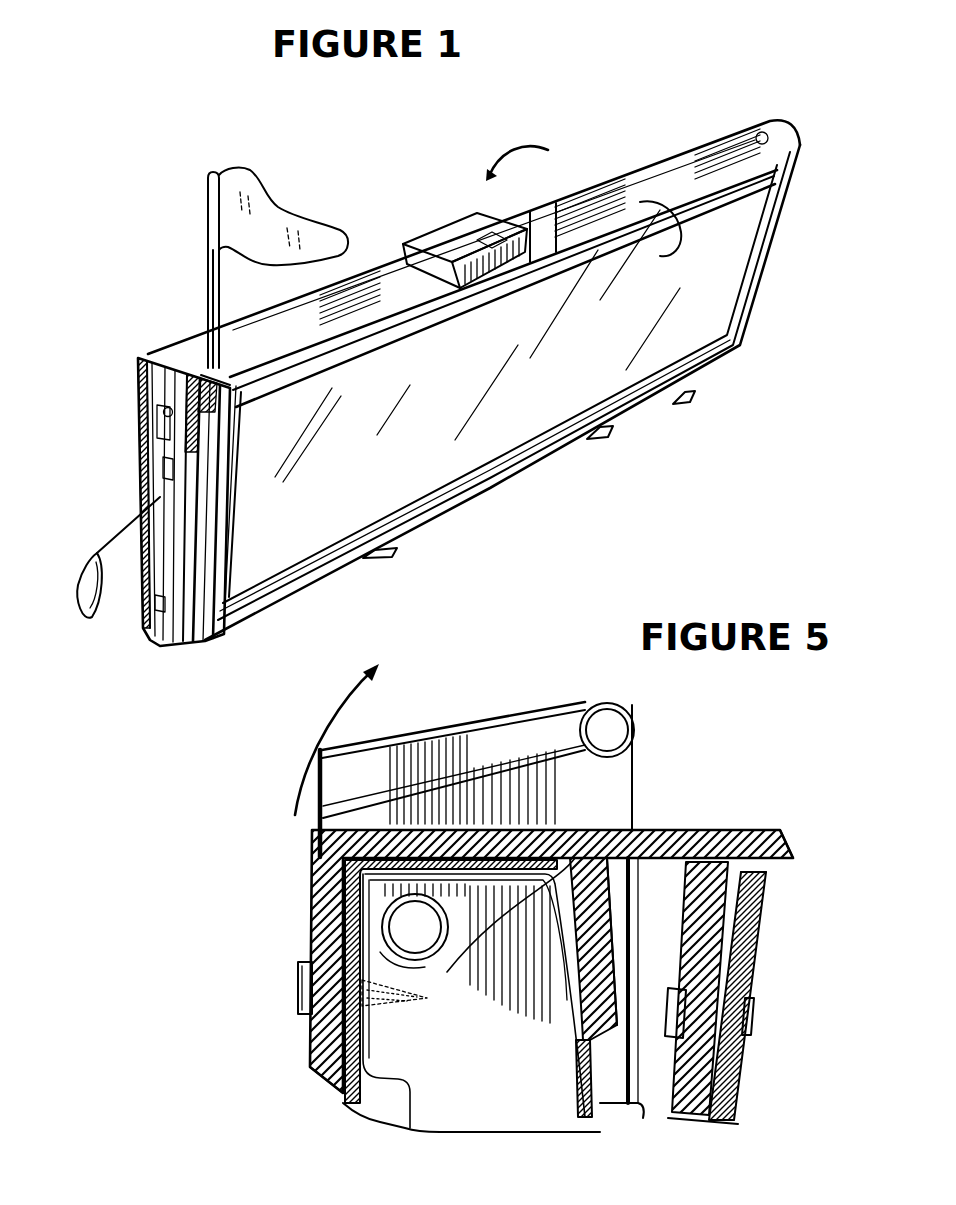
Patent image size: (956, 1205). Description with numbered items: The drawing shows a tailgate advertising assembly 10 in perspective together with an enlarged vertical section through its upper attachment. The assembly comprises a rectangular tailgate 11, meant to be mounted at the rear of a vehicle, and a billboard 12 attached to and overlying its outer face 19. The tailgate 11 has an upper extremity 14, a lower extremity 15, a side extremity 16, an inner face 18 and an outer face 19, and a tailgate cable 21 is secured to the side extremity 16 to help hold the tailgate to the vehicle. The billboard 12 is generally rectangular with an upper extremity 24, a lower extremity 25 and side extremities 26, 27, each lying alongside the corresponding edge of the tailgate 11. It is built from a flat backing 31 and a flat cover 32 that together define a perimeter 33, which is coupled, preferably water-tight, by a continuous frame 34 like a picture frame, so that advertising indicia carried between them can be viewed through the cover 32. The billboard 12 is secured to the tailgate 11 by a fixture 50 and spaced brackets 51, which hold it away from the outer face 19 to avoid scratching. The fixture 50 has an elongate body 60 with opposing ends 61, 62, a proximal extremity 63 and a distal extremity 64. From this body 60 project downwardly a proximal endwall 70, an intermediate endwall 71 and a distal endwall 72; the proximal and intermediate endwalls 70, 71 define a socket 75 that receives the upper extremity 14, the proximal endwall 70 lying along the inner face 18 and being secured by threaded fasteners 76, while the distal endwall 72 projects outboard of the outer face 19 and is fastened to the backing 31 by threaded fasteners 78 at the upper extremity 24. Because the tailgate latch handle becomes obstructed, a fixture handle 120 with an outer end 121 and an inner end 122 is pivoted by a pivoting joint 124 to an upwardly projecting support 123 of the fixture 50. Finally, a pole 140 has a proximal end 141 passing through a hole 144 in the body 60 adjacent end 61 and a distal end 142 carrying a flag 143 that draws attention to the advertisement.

In FIG. 1, the tailgate advertising assembly 10 is at (394, 186).
In FIG. 5, the tailgate advertising assembly 10 is at (820, 830).
In FIG. 1, the tailgate 11 is at (134, 487).
In FIG. 5, the tailgate 11 is at (330, 1100).
In FIG. 1, the billboard 12 is at (768, 291).
In FIG. 5, the billboard 12 is at (712, 1130).
In FIG. 1, the upper extremity 14 is at (182, 372).
In FIG. 5, the upper extremity 14 is at (417, 954).
In FIG. 1, the lower extremity 15 is at (172, 660).
In FIG. 1, the side extremity 16 is at (145, 583).
In FIG. 1, the inner face 18 is at (143, 458).
In FIG. 5, the inner face 18 is at (312, 1052).
In FIG. 1, the outer face 19 is at (200, 503).
In FIG. 5, the outer face 19 is at (636, 1112).
In FIG. 1, the tailgate cable 21 is at (100, 545).
In FIG. 1, the upper extremity 24 is at (548, 258).
In FIG. 5, the upper extremity 24 is at (748, 868).
In FIG. 1, the lower extremity 25 is at (443, 517).
In FIG. 1, the side extremity 26 is at (150, 618).
In FIG. 1, the side extremity 27 is at (767, 258).
In FIG. 5, the backing 31 is at (750, 958).
In FIG. 1, the cover 32 is at (462, 457).
In FIG. 1, the perimeter 33 is at (754, 222).
In FIG. 1, the frame 34 is at (748, 322).
In FIG. 1, the fixture 50 is at (658, 162).
In FIG. 5, the fixture 50 is at (310, 850).
In FIG. 1, the brackets 51 is at (386, 551).
In FIG. 1, the elongate body 60 is at (659, 249).
In FIG. 5, the elongate body 60 is at (456, 745).
In FIG. 1, the end 61 is at (229, 386).
In FIG. 1, the end 62 is at (785, 130).
In FIG. 1, the proximal extremity 63 is at (140, 362).
In FIG. 5, the proximal extremity 63 is at (392, 745).
In FIG. 1, the distal extremity 64 is at (485, 346).
In FIG. 5, the distal extremity 64 is at (762, 835).
In FIG. 1, the proximal endwall 70 is at (140, 397).
In FIG. 5, the proximal endwall 70 is at (310, 948).
In FIG. 1, the intermediate endwall 71 is at (192, 380).
In FIG. 5, the intermediate endwall 71 is at (567, 1033).
In FIG. 1, the distal endwall 72 is at (230, 463).
In FIG. 5, the distal endwall 72 is at (743, 1077).
In FIG. 1, the socket 75 is at (157, 408).
In FIG. 5, the socket 75 is at (486, 1057).
In FIG. 5, the threaded fastener 76 is at (298, 1003).
In FIG. 5, the threaded fastener 78 is at (673, 992).
In FIG. 1, the fixture handle 120 is at (432, 242).
In FIG. 5, the fixture handle 120 is at (505, 738).
In FIG. 5, the outer end 121 is at (340, 774).
In FIG. 5, the inner end 122 is at (560, 739).
In FIG. 1, the support 123 is at (402, 266).
In FIG. 5, the support 123 is at (640, 785).
In FIG. 5, the pivoting joint 124 is at (636, 732).
In FIG. 1, the pole 140 is at (220, 302).
In FIG. 1, the proximal end 141 is at (225, 352).
In FIG. 1, the distal end 142 is at (219, 175).
In FIG. 1, the flag 143 is at (265, 212).
In FIG. 1, the hole 144 is at (187, 365).